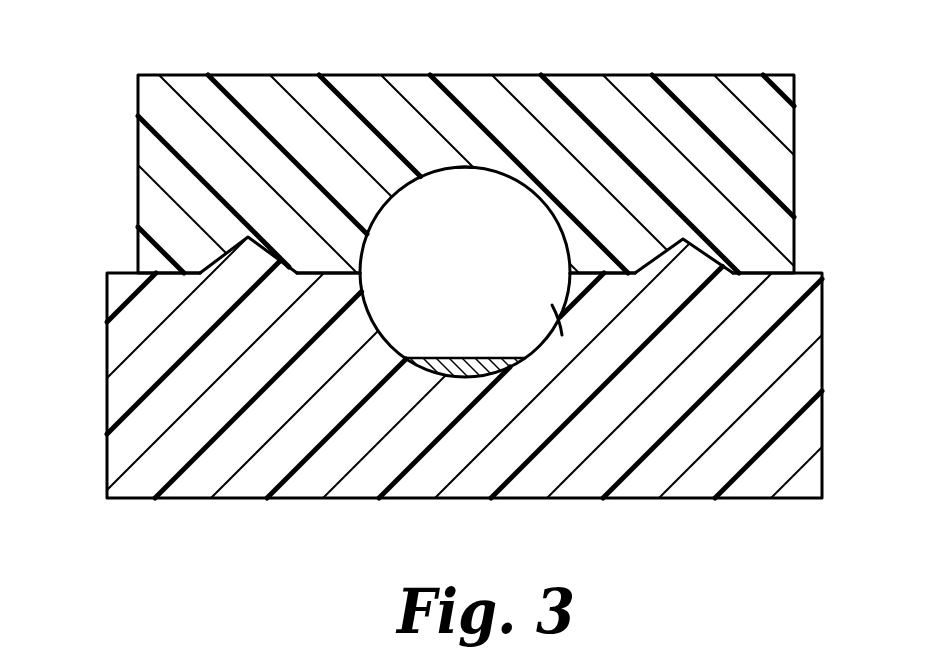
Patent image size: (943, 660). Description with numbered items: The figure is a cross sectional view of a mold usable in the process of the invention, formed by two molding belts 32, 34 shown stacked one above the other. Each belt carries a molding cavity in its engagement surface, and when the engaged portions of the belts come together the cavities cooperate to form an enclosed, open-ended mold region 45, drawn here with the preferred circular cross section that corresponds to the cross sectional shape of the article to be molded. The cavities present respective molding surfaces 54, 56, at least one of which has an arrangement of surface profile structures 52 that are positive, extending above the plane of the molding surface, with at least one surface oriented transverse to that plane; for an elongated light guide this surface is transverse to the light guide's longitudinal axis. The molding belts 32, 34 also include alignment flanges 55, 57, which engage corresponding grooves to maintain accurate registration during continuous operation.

The molding belt 32 is at (140, 124).
The molding belt 34 is at (118, 390).
The mold region 45 is at (513, 205).
The surface profile structures 52 is at (470, 372).
The molding surface 54 is at (467, 167).
The alignment flange 55 is at (215, 252).
The molding surface 56 is at (551, 335).
The alignment flange 57 is at (703, 243).